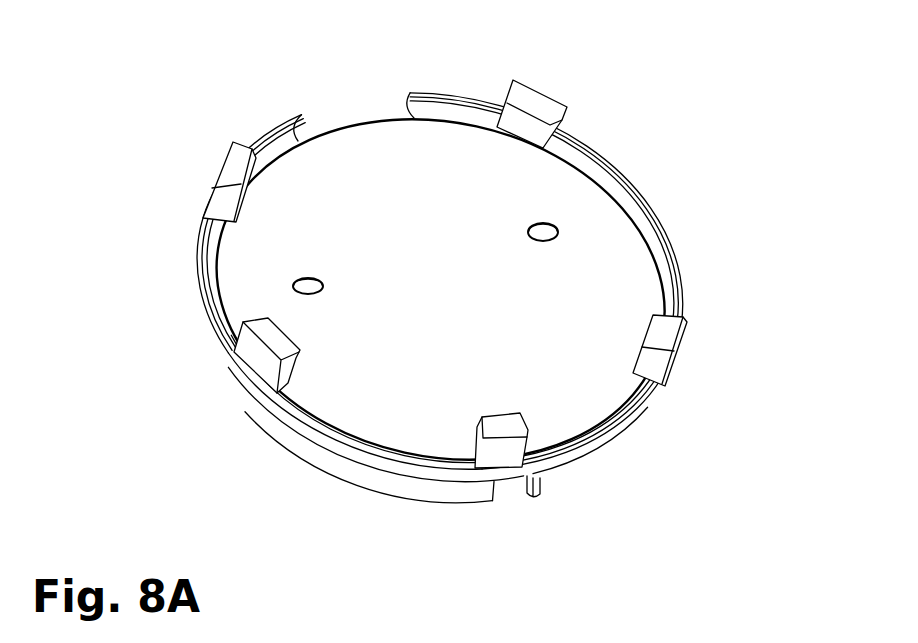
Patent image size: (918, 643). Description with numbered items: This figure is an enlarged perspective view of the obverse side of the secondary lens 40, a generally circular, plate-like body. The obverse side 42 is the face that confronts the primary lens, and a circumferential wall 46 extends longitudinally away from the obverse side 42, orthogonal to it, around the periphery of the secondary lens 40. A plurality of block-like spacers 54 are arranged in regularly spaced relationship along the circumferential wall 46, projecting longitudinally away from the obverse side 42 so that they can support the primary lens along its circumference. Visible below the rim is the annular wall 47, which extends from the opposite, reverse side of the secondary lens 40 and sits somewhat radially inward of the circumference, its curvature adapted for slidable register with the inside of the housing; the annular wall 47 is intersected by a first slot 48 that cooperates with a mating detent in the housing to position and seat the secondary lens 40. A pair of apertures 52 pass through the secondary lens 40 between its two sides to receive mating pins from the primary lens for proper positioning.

The secondary lens 40 is at (445, 291).
The obverse side 42 is at (456, 158).
The circumferential wall 46 is at (372, 458).
The annular wall 47 is at (297, 440).
The first slot 48 is at (511, 497).
The apertures 52 is at (310, 278).
The block-like spacers 54 is at (530, 105).